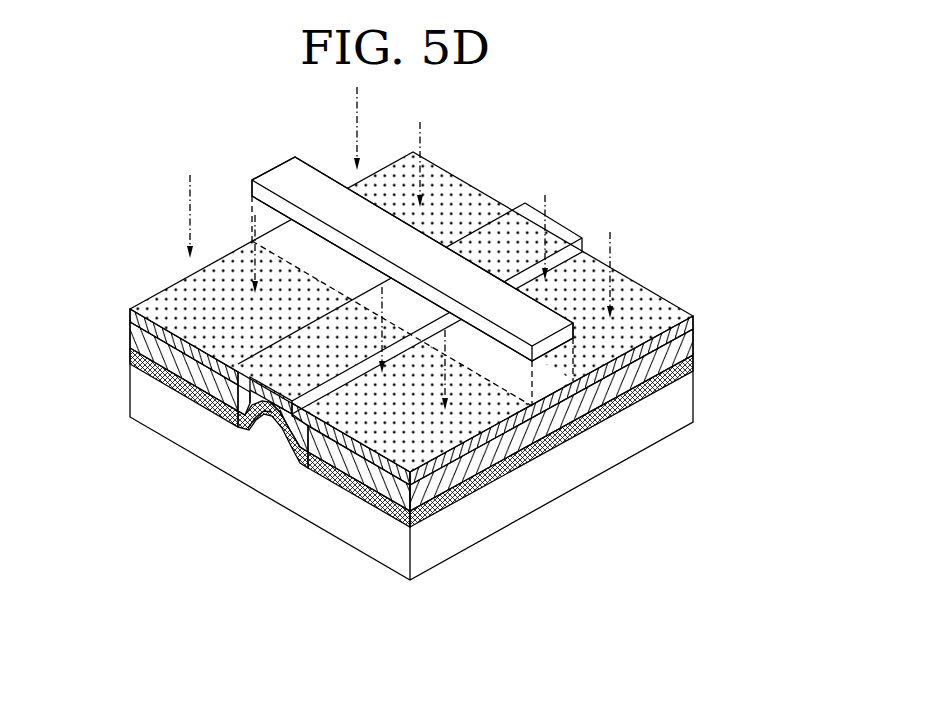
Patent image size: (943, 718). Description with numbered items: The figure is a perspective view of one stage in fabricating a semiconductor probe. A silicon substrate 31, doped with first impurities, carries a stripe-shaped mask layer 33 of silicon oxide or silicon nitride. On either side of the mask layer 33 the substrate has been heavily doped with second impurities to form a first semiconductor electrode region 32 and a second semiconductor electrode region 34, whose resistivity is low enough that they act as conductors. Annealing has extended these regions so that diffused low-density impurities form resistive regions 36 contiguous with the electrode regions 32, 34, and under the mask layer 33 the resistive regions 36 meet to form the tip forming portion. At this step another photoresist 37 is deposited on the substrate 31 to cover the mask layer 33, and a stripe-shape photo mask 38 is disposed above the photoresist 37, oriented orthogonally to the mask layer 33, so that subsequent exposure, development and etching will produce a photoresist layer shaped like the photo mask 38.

The silicon substrate 31 is at (307, 507).
The first semiconductor electrode region 32 is at (130, 335).
The mask layer 33 is at (232, 418).
The second semiconductor electrode region 34 is at (386, 490).
The resistive regions 36 is at (266, 435).
The photoresist 37 is at (130, 310).
The stripe-shape photo mask 38 is at (279, 178).